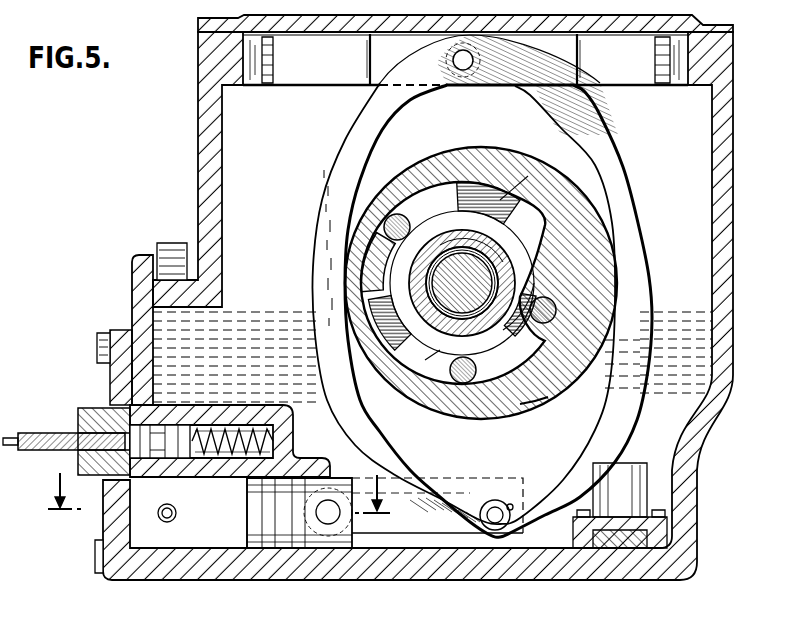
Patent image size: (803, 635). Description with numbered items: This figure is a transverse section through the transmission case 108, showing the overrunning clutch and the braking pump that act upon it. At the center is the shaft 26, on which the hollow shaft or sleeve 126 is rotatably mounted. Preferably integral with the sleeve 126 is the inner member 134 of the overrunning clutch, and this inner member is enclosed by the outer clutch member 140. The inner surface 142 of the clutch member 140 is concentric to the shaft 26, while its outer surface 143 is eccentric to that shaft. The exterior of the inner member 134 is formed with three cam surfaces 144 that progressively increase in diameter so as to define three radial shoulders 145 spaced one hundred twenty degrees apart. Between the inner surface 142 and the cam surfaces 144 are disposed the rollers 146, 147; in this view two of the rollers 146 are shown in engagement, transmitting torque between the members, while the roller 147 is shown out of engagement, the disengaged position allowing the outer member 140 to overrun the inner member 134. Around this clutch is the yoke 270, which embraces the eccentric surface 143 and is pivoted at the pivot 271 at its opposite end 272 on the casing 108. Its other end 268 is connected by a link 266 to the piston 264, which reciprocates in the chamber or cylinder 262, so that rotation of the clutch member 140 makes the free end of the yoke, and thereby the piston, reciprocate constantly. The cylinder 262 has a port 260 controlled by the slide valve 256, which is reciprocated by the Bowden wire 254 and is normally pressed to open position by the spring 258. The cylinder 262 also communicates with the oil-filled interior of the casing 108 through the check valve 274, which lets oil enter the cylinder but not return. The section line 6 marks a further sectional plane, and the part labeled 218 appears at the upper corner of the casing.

The section line 6- 6 is at (219, 505).
The shaft 26 is at (483, 283).
The transmission case 108 is at (513, 575).
The hollow shaft or sleeve 126 is at (417, 268).
The inner member of overrunning clutch 134 is at (520, 292).
The clutch member 140 is at (497, 410).
The inner surface 142 is at (497, 188).
The outer surface 143 is at (533, 403).
The cam surfaces 144 is at (520, 200).
The radial shoulders 145 is at (458, 201).
The rollers 146 is at (400, 214).
The roller 147 is at (553, 307).
The cover 218 is at (738, 29).
The Bowden wire 254 is at (12, 437).
The slide valve 256 is at (143, 460).
The spring 258 is at (282, 440).
The port 260 is at (168, 423).
The chamber or cylinder 262 is at (195, 545).
The piston 264 is at (310, 552).
The link 266 is at (402, 523).
The end of yoke 268 is at (517, 523).
The yoke 270 is at (617, 167).
The pivot 271 is at (463, 68).
The opposite end of yoke 272 is at (517, 72).
The check valve 274 is at (172, 522).